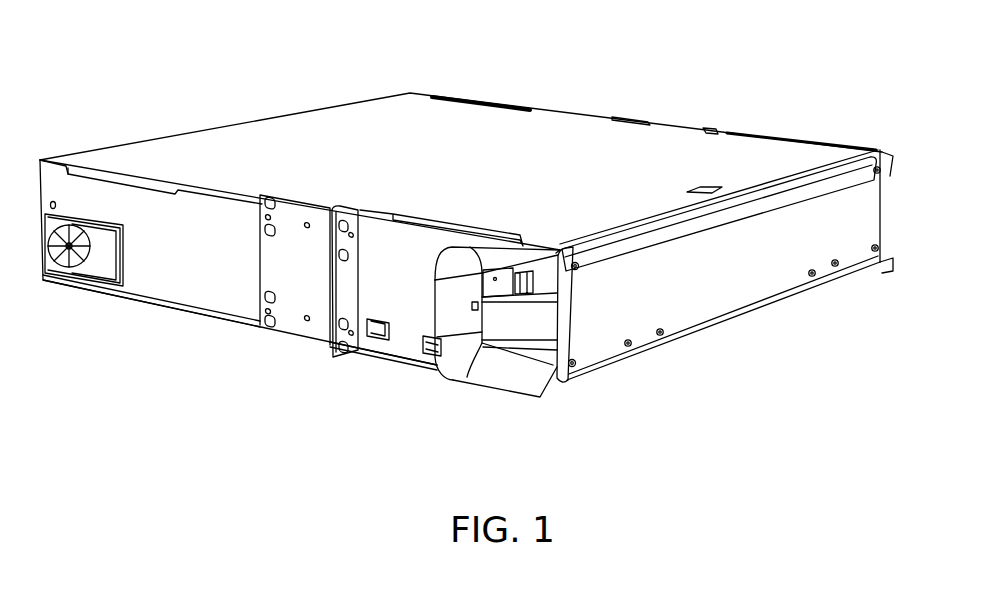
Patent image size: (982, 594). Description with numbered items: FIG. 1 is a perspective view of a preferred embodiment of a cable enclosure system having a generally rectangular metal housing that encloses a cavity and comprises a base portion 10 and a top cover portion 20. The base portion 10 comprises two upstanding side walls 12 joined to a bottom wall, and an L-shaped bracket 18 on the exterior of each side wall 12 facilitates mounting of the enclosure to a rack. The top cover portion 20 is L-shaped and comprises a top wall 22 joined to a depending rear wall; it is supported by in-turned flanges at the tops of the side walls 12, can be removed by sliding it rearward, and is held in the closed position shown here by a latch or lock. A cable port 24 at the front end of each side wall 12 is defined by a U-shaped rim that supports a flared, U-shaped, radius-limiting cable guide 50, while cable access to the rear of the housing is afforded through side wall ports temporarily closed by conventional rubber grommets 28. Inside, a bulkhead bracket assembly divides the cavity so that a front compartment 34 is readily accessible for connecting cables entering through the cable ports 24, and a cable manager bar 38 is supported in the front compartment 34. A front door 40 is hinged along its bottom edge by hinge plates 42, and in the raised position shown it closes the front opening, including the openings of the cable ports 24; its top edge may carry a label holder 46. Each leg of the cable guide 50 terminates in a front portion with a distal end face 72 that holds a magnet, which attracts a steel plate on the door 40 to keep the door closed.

The base portion 10 is at (466, 244).
The top cover portion 20 is at (466, 231).
The top wall 22 is at (352, 106).
The side wall 12 is at (220, 305).
The L-shaped bracket 18 is at (338, 352).
The rubber grommet 28 is at (97, 261).
The distal end face 72 is at (552, 258).
The label holder 46 is at (657, 236).
The front door 40 is at (717, 312).
The hinge plate 42 is at (643, 350).
The cable port 24 is at (522, 342).
The front compartment 34 is at (541, 339).
The cable manager bar 38 is at (545, 297).
The cable guide 50 is at (500, 378).